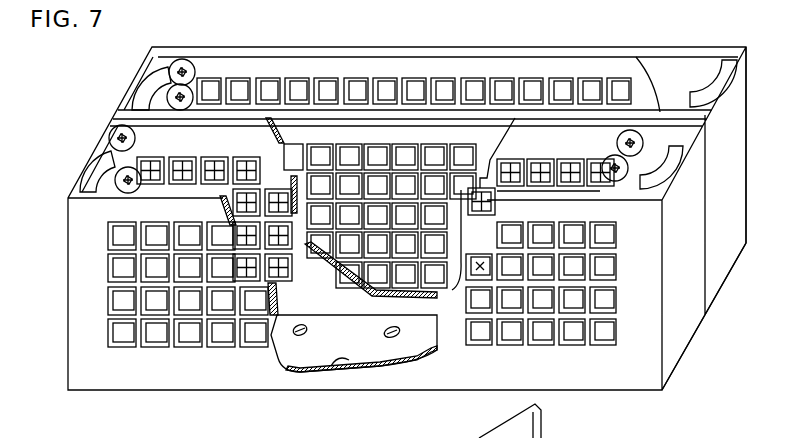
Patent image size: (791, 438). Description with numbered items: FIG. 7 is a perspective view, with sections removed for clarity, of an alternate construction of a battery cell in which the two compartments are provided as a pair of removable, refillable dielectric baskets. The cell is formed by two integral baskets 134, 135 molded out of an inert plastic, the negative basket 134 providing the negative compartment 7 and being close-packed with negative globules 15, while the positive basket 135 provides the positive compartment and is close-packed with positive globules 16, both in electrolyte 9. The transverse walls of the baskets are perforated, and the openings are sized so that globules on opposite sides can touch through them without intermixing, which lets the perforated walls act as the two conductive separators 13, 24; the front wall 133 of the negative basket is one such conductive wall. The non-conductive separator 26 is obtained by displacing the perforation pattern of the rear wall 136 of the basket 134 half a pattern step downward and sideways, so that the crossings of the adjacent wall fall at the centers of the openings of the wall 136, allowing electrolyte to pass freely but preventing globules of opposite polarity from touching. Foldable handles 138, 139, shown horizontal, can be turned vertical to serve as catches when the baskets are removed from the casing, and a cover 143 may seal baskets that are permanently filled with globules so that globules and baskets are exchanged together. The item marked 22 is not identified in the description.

The negative compartment 7 is at (334, 340).
The electrolyte 9 is at (374, 146).
The conductive separator 13 is at (128, 292).
The negative globules 15 is at (187, 141).
The positive globules 16 is at (195, 73).
The spacer 22 is at (539, 421).
The conductive separator 24 is at (364, 97).
The dielectric separator 26 is at (505, 160).
The front wall 133 is at (133, 263).
The negative basket 134 is at (680, 312).
The positive basket 135 is at (720, 261).
The rear wall 136 is at (235, 155).
The foldable handle 138 is at (170, 68).
The foldable handle 139 is at (693, 89).
The cover 143 is at (681, 67).